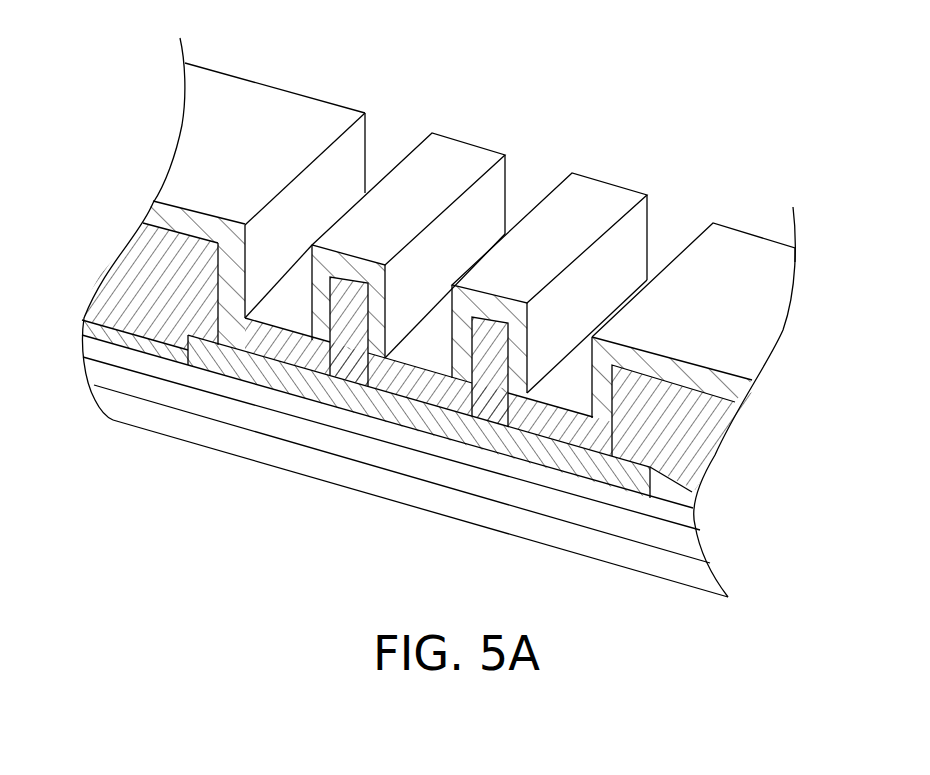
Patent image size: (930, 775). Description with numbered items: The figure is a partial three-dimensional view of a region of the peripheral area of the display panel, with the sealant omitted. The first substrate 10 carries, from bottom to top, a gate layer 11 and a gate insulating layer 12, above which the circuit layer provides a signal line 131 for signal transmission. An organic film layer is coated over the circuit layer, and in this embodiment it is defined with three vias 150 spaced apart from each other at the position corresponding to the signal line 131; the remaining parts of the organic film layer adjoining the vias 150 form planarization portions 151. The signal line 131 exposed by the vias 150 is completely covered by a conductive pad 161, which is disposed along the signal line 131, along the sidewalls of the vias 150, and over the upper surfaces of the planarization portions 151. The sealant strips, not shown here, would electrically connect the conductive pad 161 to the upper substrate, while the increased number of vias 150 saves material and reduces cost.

The first substrate 10 is at (258, 456).
The gate layer 11 is at (342, 452).
The gate insulating layer 12 is at (418, 452).
The signal line 131 is at (478, 446).
The via 150 is at (386, 135).
The planarization portion 151 is at (142, 236).
The conductive pad 161 is at (732, 227).